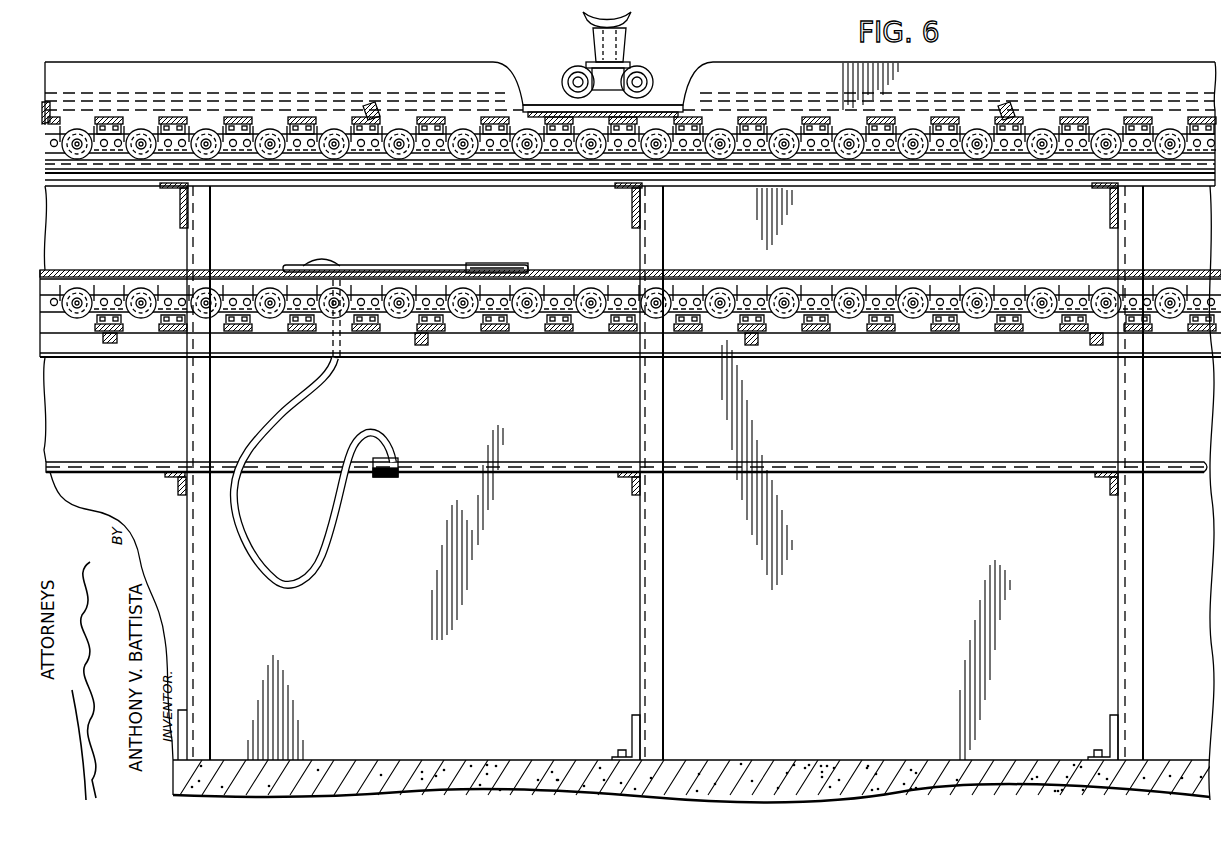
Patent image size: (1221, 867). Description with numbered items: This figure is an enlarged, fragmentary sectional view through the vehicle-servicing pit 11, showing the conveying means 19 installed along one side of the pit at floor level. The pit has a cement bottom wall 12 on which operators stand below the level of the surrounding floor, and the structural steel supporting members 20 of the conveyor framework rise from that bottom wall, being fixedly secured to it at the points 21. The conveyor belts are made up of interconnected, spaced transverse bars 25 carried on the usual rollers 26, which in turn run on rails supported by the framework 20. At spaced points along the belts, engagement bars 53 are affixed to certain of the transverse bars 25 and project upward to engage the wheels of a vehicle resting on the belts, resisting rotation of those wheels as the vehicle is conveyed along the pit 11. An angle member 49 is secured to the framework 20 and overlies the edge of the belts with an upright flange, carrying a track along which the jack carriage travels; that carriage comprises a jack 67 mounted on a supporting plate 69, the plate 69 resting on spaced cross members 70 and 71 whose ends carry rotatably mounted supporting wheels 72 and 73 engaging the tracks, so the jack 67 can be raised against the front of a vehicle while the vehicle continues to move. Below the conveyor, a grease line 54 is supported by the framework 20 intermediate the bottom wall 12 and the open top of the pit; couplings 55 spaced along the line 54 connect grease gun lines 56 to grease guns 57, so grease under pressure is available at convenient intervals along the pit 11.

The pit 11 is at (687, 645).
The bottom wall 12 is at (487, 760).
The conveying means 19 is at (866, 186).
The structural steel supporting members 20 is at (178, 482).
The floor securing points 21 is at (631, 757).
The transverse bars 25 is at (113, 118).
The rollers 26 is at (264, 158).
The angle member 49 is at (182, 66).
The engagement bars 53 is at (372, 106).
The grease line 54 is at (926, 473).
The couplings 55 is at (395, 478).
The grease gun lines 56 is at (255, 437).
The grease guns 57 is at (470, 243).
The jack 67 is at (621, 45).
The supporting plate 69 is at (597, 62).
The supporting cross member 70 is at (580, 75).
The supporting cross member 71 is at (645, 80).
The supporting wheels 72 is at (562, 80).
The supporting wheels 73 is at (656, 94).